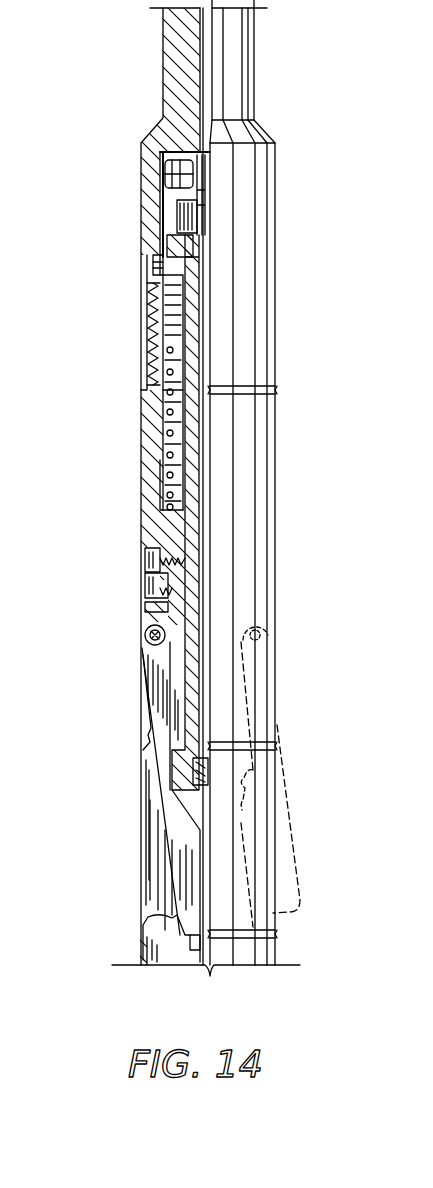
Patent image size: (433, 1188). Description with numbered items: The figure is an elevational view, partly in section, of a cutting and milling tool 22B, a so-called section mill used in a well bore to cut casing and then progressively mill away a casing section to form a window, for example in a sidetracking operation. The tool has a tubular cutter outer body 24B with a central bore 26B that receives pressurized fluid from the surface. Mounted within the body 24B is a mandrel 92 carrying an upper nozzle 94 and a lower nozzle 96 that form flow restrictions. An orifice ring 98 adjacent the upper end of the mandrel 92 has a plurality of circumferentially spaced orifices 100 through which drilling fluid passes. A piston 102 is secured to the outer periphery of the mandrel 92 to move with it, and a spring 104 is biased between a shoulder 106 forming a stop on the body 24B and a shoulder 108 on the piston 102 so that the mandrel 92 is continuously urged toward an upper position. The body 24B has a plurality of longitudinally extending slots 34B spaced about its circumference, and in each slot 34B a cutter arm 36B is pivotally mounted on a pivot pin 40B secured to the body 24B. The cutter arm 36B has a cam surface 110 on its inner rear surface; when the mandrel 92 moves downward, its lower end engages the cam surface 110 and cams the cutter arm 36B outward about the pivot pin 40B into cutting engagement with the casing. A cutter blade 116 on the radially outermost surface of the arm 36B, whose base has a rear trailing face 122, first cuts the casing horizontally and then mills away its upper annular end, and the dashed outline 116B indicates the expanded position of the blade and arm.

The cutting and milling tool 22B is at (281, 72).
The tubular cutter outer body 24B is at (263, 218).
The central bore 26B is at (197, 82).
The longitudinal extending slot 34B is at (141, 727).
The cutter arm 36B is at (146, 712).
The pivot pin 40B is at (147, 634).
The mandrel 92 is at (195, 483).
The upper nozzle 94 is at (202, 171).
The lower nozzle 96 is at (208, 778).
The orifice ring 98 is at (163, 183).
The orifice 100 is at (180, 175).
The piston 102 is at (157, 258).
The spring 104 is at (167, 352).
The shoulder 106 is at (170, 485).
The shoulder 108 is at (167, 305).
The cam surface 110 is at (178, 823).
The cutter blade 116 is at (142, 872).
The dog 116B is at (298, 857).
The rear trailing face 122 is at (153, 823).